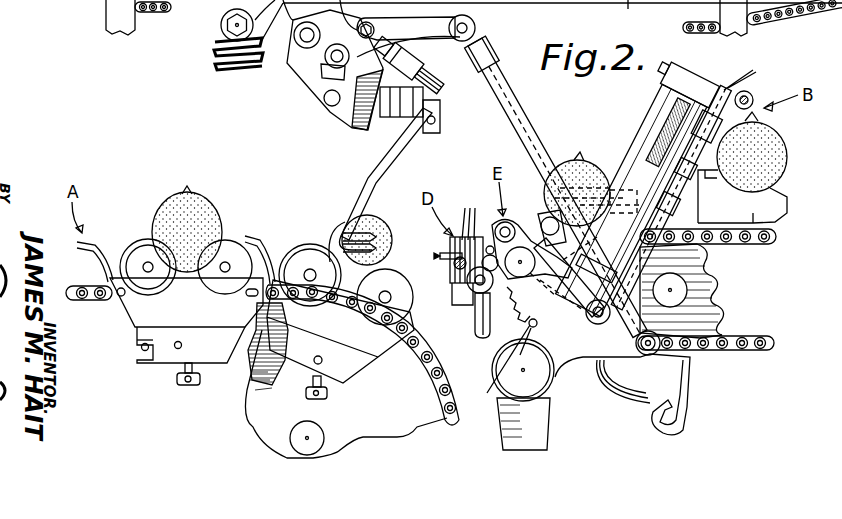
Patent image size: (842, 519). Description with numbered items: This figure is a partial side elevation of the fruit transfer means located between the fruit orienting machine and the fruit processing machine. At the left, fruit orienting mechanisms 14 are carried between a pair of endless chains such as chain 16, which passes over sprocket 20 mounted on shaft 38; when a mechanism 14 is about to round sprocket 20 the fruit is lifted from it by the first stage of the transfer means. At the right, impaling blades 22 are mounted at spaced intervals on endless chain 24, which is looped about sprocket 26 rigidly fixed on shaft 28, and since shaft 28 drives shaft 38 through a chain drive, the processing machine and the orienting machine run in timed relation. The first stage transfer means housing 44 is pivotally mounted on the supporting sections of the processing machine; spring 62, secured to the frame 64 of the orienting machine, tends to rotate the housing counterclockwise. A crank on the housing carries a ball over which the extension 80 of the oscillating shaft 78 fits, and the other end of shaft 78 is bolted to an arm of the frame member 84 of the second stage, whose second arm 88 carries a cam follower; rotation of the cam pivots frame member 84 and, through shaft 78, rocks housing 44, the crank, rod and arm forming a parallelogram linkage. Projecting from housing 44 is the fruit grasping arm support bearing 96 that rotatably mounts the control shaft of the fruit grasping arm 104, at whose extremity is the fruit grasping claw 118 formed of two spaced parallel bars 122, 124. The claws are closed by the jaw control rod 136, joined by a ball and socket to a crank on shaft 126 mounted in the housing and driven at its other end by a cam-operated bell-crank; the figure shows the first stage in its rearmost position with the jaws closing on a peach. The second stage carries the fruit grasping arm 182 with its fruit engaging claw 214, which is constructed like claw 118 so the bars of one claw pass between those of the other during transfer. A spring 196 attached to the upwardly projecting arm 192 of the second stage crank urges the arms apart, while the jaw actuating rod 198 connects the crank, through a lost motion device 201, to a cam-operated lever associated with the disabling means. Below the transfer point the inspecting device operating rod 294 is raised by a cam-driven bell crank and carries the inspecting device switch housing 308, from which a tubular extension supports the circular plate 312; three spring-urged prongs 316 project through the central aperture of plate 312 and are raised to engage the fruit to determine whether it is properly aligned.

The fruit orienting mechanism 14 is at (132, 317).
The endless chain 16 is at (426, 356).
The sprocket 20 is at (425, 427).
The impaling blade 22 is at (787, 210).
The endless chain 24 is at (776, 237).
The sprocket 26 is at (712, 283).
The shaft 28 is at (673, 280).
The shaft 38 is at (318, 432).
The first stage transfer means housing 44 is at (341, 116).
The spring 62 is at (214, 63).
The frame 64 is at (562, 13).
The oscillating shaft 78 is at (513, 100).
The extension 80 is at (477, 25).
The frame member 84 is at (690, 92).
The second arm 88 is at (546, 426).
The fruit grasping arm support bearing 96 is at (390, 118).
The fruit grasping arm 104 is at (376, 172).
The fruit grasping claw 118 is at (362, 244).
The bar 122 is at (376, 237).
The bar 124 is at (376, 248).
The shaft 126 is at (331, 59).
The jaw control rod 136 is at (437, 83).
The fruit grasping arm 182 is at (648, 124).
The upwardly projecting arm 192 is at (754, 73).
The spring 196 is at (751, 95).
The jaw actuating rod 198 is at (716, 152).
The lost motion device 201 is at (680, 214).
The fruit engaging claw 214 is at (589, 183).
The inspecting device operating rod 294 is at (475, 322).
The inspecting device switch housing 308 is at (466, 286).
The circular plate 312 is at (440, 260).
The prongs 316 is at (472, 215).